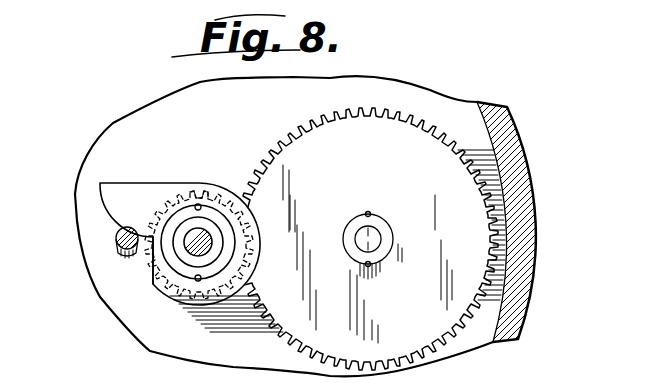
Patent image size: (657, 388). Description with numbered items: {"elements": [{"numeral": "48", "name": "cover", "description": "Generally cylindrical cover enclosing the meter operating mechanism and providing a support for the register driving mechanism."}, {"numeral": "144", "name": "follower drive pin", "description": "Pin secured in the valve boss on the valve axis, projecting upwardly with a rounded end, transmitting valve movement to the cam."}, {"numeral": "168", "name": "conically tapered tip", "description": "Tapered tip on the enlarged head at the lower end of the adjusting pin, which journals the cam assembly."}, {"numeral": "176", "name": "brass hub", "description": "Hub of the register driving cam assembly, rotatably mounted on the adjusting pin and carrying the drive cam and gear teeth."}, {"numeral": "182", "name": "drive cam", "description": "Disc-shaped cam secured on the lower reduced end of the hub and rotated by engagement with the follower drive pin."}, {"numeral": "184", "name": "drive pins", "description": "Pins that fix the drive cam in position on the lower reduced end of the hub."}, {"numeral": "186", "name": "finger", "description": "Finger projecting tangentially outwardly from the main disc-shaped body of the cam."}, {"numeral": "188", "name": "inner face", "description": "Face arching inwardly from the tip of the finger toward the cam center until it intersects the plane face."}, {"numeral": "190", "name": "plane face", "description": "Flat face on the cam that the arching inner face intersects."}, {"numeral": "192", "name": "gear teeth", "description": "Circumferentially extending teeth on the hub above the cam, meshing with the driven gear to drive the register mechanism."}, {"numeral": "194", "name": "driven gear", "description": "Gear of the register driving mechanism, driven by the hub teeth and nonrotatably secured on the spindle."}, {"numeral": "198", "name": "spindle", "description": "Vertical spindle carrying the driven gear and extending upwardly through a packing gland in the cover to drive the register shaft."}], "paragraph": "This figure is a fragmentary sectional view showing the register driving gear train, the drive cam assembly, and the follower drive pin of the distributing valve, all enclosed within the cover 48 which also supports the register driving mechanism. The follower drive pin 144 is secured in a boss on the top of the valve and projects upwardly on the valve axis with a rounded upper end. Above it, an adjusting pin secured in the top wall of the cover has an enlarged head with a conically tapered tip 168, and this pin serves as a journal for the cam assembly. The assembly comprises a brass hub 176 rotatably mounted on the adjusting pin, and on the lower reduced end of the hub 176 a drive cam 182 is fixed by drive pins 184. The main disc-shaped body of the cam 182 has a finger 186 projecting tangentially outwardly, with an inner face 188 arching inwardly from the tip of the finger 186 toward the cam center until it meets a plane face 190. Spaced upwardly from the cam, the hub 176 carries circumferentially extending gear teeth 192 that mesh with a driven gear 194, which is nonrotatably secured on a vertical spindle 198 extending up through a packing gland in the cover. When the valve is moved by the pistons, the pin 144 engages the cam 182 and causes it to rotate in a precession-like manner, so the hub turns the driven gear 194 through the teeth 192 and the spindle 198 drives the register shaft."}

The housing 48 is at (520, 170).
The pin 144 is at (120, 252).
The shaft 168 is at (217, 232).
The carrier plate 176 is at (183, 209).
The pinion gear 182 is at (193, 301).
The pins 184 is at (200, 205).
The plate 186 is at (136, 175).
The stud 188 is at (118, 235).
The plate edge 190 is at (153, 266).
The gear teeth 192 is at (171, 196).
The gear 194 is at (395, 137).
The hub 198 is at (380, 237).